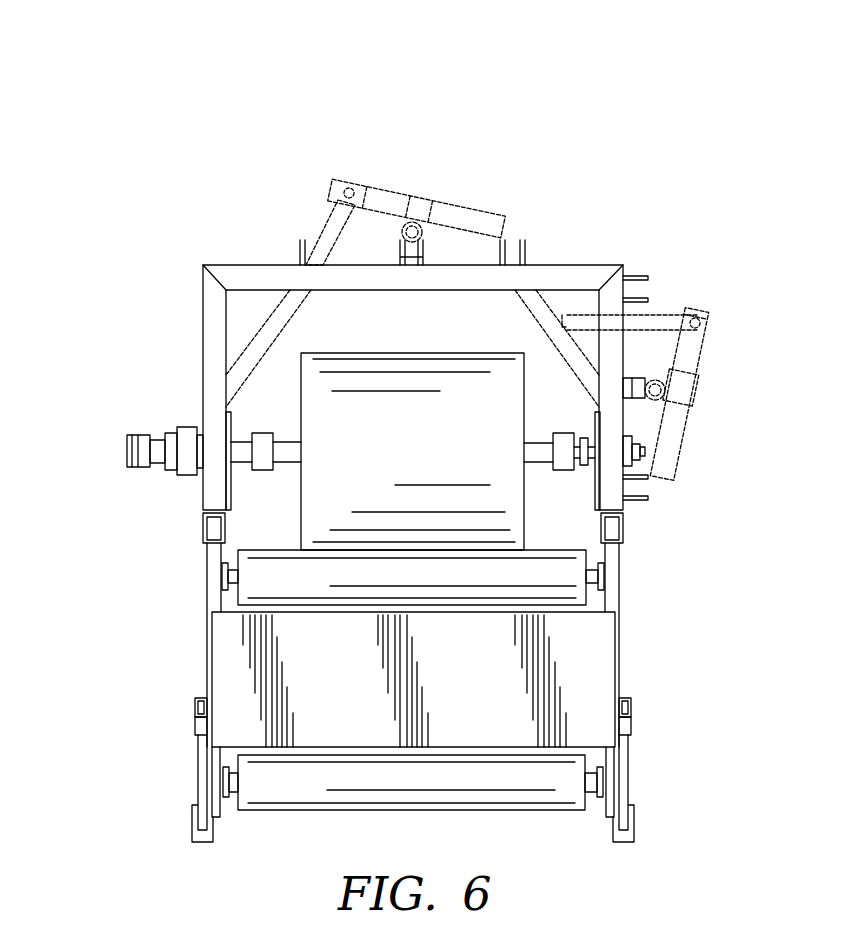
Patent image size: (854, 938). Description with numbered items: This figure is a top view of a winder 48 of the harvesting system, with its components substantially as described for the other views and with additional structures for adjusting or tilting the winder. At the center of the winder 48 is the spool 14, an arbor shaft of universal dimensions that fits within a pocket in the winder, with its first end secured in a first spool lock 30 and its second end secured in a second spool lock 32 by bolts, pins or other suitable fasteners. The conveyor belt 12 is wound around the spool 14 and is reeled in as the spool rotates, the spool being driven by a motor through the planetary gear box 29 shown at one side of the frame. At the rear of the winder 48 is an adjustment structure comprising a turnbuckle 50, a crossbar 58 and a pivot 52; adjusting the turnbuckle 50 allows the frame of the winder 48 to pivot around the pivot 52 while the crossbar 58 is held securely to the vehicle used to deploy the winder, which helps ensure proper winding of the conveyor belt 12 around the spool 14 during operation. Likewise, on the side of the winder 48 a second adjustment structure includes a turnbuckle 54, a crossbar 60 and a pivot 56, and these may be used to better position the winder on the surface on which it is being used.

The winder 48 is at (640, 168).
The conveyor belt 12 is at (514, 338).
The spool 14 is at (541, 425).
The planetary gear box 29 is at (152, 421).
The first spool lock 30 is at (263, 470).
The second spool lock 32 is at (558, 470).
The turnbuckle 50 is at (326, 230).
The pivot 52 is at (400, 221).
The crossbar 58 is at (482, 218).
The turnbuckle 54 is at (672, 318).
The pivot 56 is at (662, 378).
The crossbar 60 is at (670, 456).